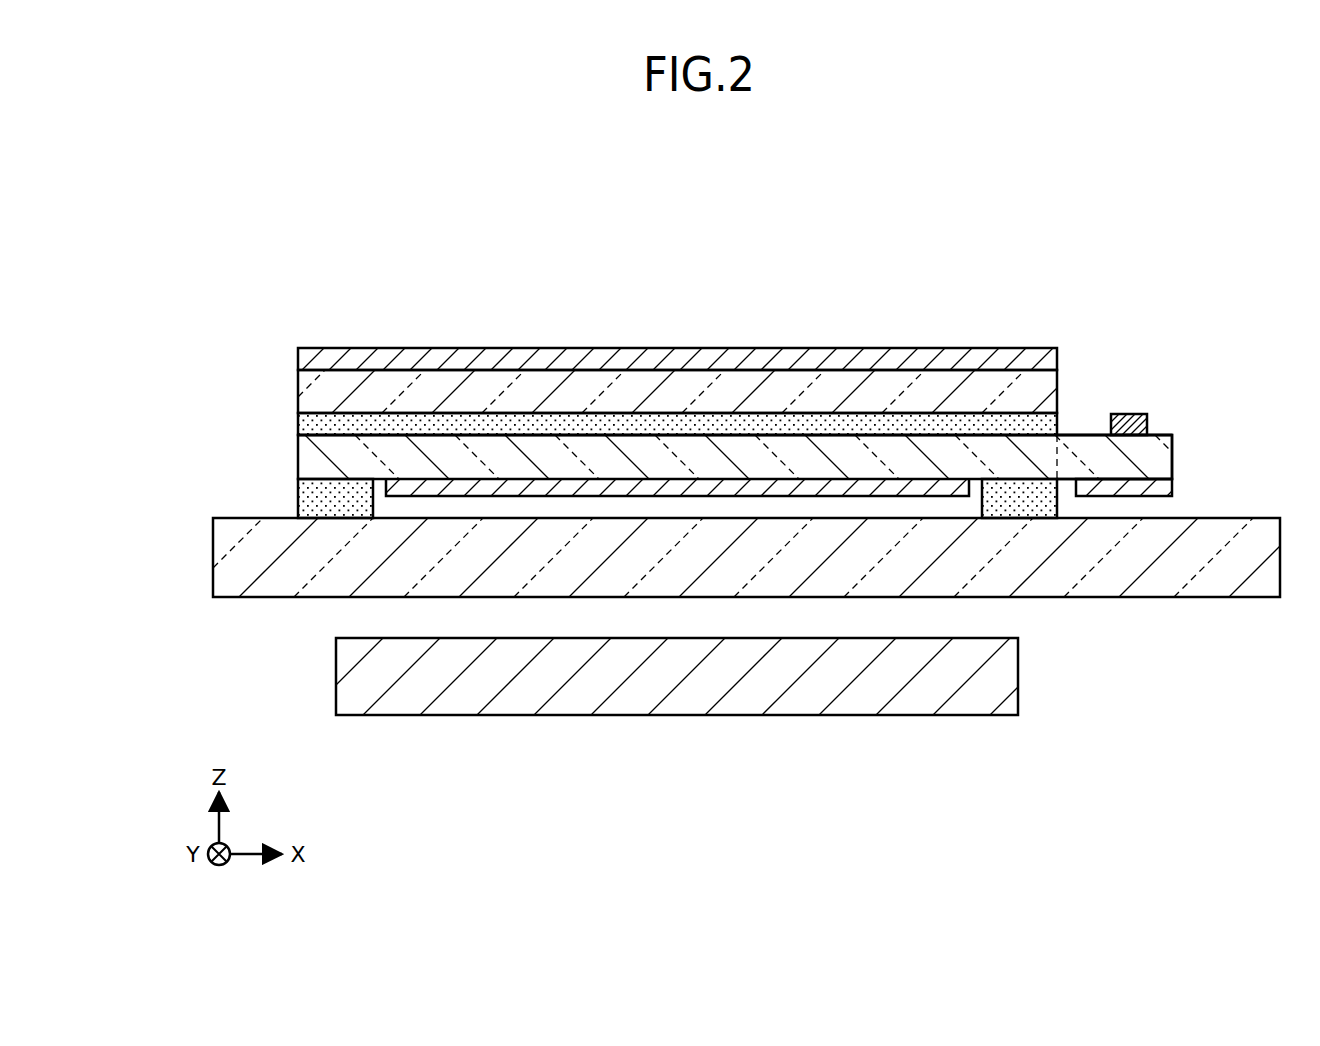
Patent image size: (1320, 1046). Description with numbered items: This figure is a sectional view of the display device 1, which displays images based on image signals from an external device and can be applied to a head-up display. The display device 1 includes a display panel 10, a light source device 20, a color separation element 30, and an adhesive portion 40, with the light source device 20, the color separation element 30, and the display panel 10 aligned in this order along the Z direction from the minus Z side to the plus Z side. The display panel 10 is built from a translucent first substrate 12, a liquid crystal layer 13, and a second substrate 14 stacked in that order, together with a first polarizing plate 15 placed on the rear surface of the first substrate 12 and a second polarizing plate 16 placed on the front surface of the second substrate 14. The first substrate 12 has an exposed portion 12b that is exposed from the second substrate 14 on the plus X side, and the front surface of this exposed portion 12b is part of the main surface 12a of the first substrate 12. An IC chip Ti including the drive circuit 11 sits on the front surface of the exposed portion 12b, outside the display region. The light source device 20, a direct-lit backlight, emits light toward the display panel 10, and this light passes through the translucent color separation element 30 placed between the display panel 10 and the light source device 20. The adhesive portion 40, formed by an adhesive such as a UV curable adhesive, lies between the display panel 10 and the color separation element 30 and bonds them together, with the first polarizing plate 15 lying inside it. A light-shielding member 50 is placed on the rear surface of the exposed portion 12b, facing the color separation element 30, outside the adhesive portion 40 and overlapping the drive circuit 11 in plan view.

The display device 1 is at (288, 174).
The display panel 10 is at (402, 345).
The drive circuit 11 is at (1128, 414).
The first substrate 12 is at (298, 456).
The main surface 12a is at (842, 435).
The exposed portion 12b is at (1157, 453).
The liquid crystal layer 13 is at (298, 424).
The second substrate 14 is at (298, 391).
The first polarizing plate 15 is at (399, 497).
The second polarizing plate 16 is at (331, 344).
The light source device 20 is at (397, 718).
The color separation element 30 is at (200, 557).
The adhesive portion 40 is at (1020, 502).
The light-shielding member 50 is at (1172, 488).